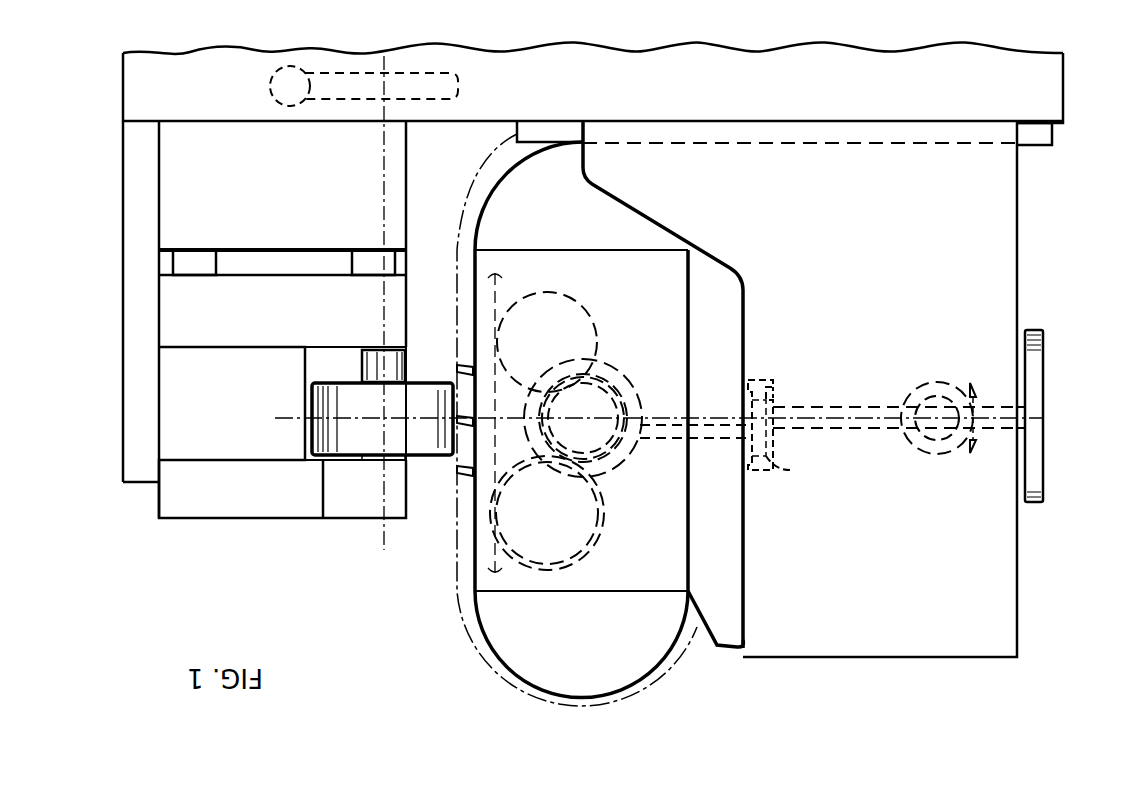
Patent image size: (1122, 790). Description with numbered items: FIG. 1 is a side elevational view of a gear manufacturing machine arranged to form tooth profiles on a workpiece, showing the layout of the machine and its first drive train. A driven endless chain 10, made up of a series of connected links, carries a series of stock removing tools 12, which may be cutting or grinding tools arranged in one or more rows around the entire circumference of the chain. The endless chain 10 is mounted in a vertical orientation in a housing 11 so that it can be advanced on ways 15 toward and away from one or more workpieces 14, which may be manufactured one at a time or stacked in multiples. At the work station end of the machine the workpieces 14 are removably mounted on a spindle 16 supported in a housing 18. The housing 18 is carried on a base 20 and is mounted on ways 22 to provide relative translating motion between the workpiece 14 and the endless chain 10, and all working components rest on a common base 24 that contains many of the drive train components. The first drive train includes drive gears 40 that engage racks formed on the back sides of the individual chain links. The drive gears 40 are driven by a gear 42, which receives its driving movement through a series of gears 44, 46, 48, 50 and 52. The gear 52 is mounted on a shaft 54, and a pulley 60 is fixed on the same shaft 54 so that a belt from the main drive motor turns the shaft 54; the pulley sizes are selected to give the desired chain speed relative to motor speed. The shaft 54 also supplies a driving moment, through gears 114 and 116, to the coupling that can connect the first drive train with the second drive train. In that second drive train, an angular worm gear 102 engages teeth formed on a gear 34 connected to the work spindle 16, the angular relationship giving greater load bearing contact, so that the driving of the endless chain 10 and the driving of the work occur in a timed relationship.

The endless chain 10 is at (478, 636).
The housing 11 is at (553, 207).
The stock removing tools 12 is at (457, 368).
The workpiece 14 is at (372, 462).
The ways 15 is at (515, 135).
The spindle 16 is at (362, 364).
The housing 18 is at (276, 308).
The base 20 is at (266, 194).
The ways 22 is at (216, 272).
The common base 24 is at (698, 80).
The gear 34 is at (462, 80).
The drive gears 40 is at (582, 308).
The gear 42 is at (610, 372).
The gear 44 is at (622, 380).
The gear 46 is at (622, 450).
The gear 48 is at (755, 470).
The gear 50 is at (788, 471).
The gear 52 is at (773, 380).
The shaft 54 is at (846, 405).
The pulley 60 is at (1043, 352).
The angular worm gear 102 is at (272, 76).
The gear 114 is at (972, 455).
The gear 116 is at (922, 452).